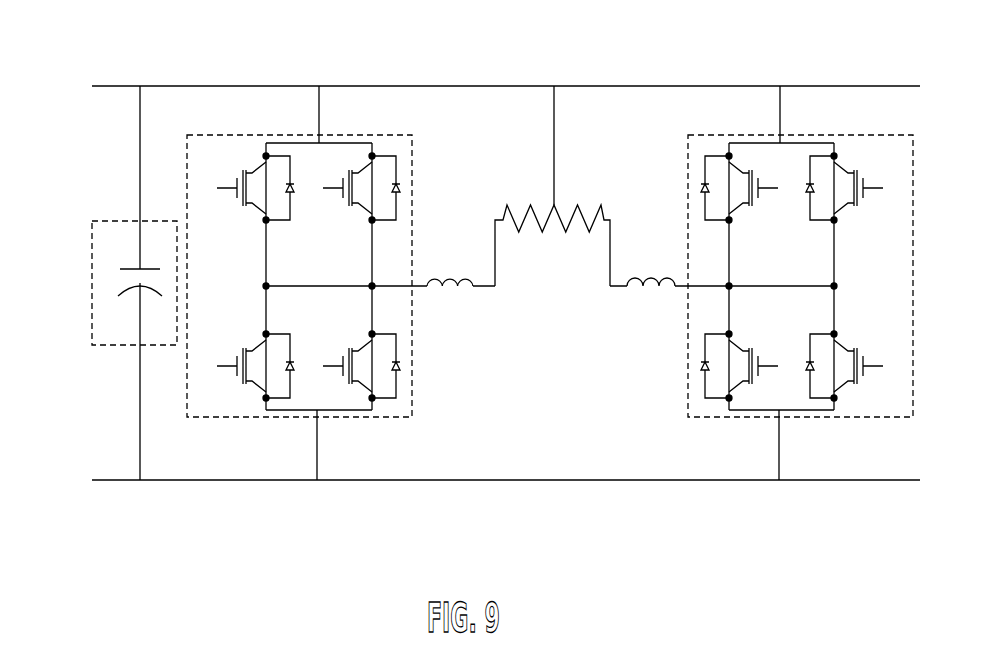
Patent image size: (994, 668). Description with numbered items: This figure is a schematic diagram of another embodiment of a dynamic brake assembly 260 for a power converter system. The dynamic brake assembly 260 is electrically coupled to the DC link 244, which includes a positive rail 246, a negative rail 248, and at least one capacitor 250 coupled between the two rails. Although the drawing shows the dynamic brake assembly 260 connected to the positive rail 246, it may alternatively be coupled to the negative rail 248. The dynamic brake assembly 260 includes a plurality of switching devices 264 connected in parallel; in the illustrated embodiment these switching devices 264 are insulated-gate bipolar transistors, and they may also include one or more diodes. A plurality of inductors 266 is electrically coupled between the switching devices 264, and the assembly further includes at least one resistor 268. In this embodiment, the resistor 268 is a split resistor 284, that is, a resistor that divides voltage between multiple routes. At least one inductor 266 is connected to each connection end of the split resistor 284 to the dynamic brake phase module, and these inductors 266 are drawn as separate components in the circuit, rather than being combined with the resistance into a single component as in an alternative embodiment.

The DC link 244 is at (68, 186).
The positive rail 246 is at (314, 85).
The negative rail 248 is at (296, 482).
The capacitor 250 is at (90, 291).
The dynamic brake assembly 260 is at (722, 41).
The switching devices 264 is at (250, 219).
The inductors 266 is at (447, 293).
The resistor 268 is at (514, 226).
The split resistor 284 is at (586, 226).